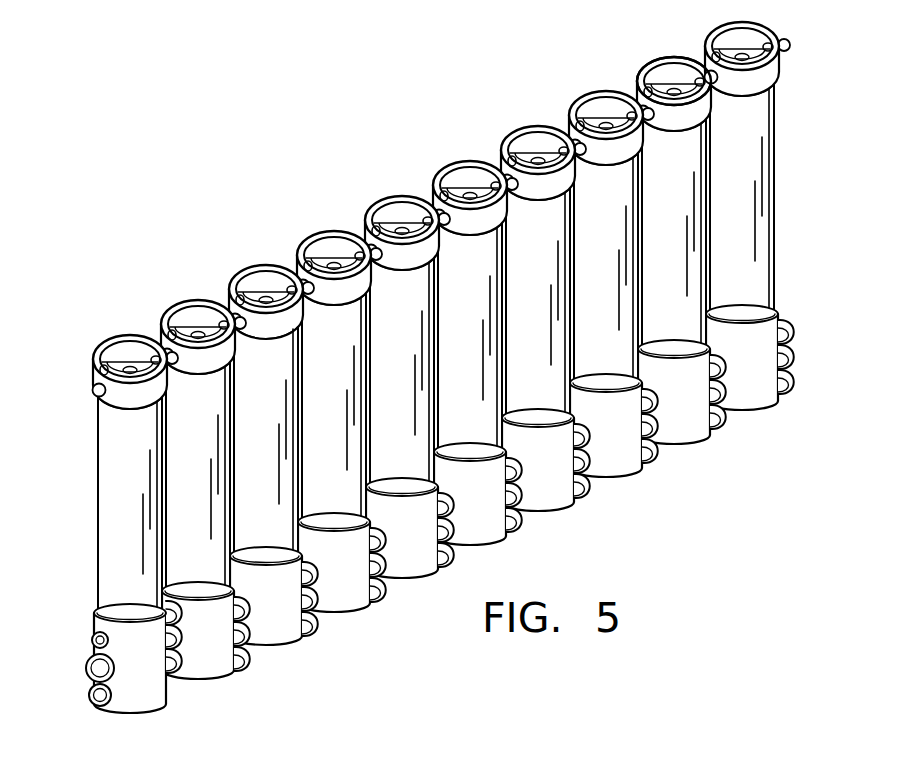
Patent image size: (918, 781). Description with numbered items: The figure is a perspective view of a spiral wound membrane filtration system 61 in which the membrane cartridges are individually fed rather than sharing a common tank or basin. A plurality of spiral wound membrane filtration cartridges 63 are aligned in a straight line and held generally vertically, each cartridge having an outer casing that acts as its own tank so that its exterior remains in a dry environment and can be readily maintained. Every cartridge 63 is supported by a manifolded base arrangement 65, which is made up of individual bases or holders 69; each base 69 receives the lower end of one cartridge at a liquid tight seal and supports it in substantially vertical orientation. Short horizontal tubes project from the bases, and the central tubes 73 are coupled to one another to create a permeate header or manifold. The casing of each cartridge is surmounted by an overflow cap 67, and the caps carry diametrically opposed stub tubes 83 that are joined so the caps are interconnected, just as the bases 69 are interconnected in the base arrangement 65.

The system 61 is at (396, 147).
The spiral wound membrane filtration cartridge 63 is at (163, 540).
The manifolded base arrangement 65 is at (103, 558).
The overflow cap 67 is at (770, 32).
The base 69 is at (550, 483).
The central tube 73 is at (86, 676).
The stub tube 83 is at (93, 390).